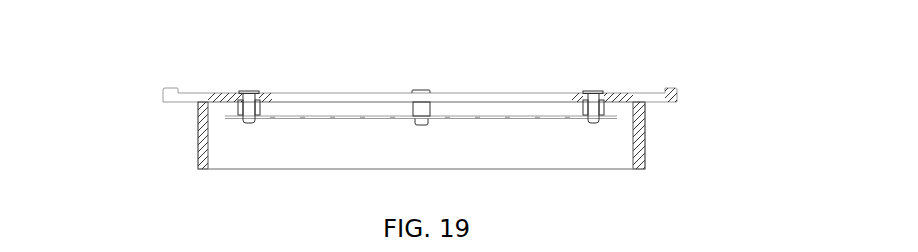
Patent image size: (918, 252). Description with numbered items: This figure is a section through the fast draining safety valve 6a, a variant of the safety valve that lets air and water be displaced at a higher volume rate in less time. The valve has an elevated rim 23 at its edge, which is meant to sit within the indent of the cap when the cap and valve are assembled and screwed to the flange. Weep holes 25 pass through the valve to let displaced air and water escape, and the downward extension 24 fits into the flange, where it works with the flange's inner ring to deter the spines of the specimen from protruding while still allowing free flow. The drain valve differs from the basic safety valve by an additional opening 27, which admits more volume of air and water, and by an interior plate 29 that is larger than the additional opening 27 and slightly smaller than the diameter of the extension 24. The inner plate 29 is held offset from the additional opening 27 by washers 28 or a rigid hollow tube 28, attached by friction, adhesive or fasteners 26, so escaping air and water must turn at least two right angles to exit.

The fast draining safety valve 6a is at (392, 84).
The elevated rim 23 is at (724, 59).
The extension 24 is at (491, 156).
The weep holes 25 is at (124, 138).
The bolt 26 is at (421, 82).
The additional opening 27 is at (420, 74).
The washers 28 is at (345, 151).
The interior plate 29 is at (424, 173).